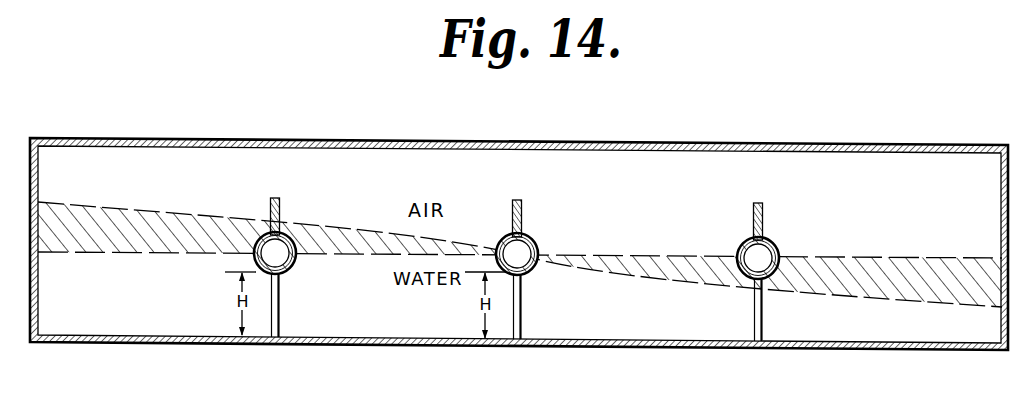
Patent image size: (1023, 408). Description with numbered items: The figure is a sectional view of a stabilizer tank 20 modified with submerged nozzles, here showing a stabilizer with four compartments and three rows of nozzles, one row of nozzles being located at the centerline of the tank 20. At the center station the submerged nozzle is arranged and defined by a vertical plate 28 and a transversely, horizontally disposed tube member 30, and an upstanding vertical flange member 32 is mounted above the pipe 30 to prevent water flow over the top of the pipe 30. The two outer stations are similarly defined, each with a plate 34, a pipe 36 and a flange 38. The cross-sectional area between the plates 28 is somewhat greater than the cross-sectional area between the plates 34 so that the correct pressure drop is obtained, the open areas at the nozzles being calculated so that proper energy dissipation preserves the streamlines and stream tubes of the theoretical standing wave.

The stabilizer tank 20 is at (706, 141).
The vertical plate 28 is at (522, 320).
The tube member 30 is at (529, 238).
The vertical flange member 32 is at (524, 216).
The plate 34 is at (282, 320).
The pipe 36 is at (292, 266).
The flange 38 is at (281, 216).